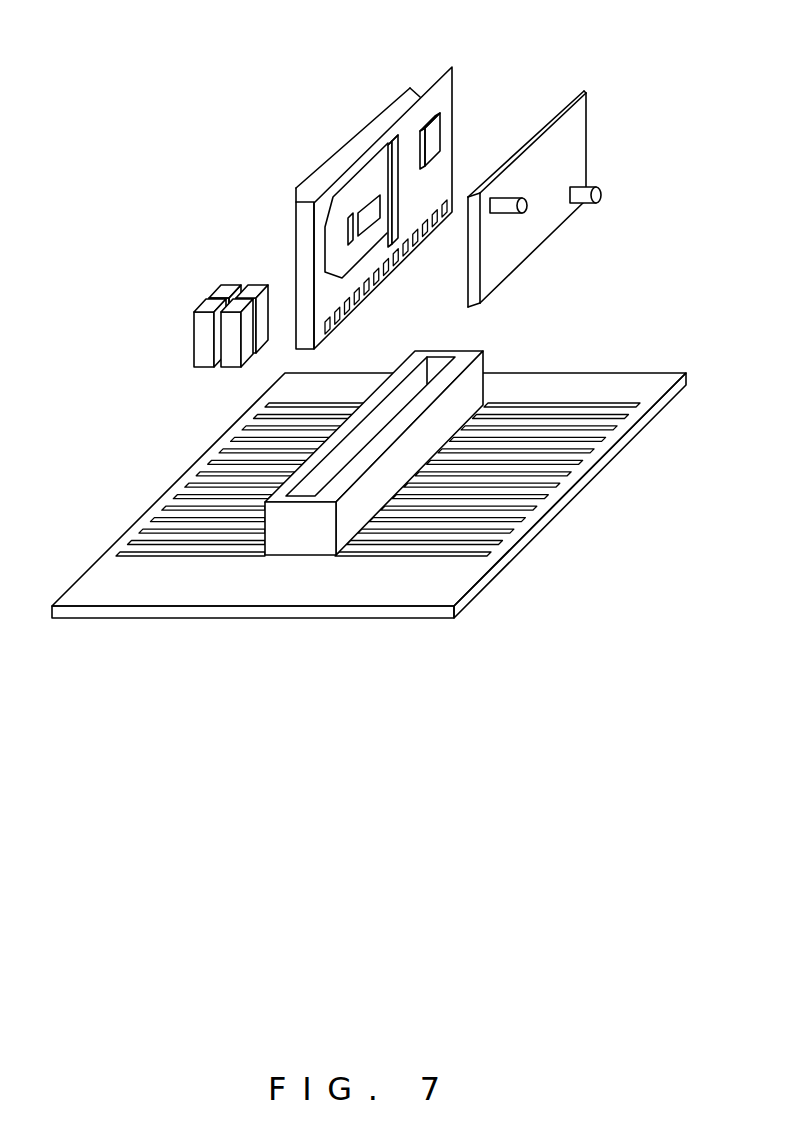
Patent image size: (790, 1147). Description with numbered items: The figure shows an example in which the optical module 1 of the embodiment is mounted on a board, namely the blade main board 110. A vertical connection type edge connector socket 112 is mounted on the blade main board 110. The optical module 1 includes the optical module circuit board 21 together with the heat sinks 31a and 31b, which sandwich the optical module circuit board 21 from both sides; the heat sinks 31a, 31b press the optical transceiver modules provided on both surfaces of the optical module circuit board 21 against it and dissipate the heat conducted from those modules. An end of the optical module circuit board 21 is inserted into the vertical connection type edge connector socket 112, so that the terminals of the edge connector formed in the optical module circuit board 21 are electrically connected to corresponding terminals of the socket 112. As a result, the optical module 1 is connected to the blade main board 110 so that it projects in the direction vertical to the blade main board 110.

The optical module 1 is at (188, 267).
The optical module circuit board 21 is at (452, 67).
The heat sink 31a is at (586, 92).
The heat sink 31b is at (378, 116).
The blade main board 110 is at (638, 373).
The vertical connection type edge connector socket 112 is at (488, 362).